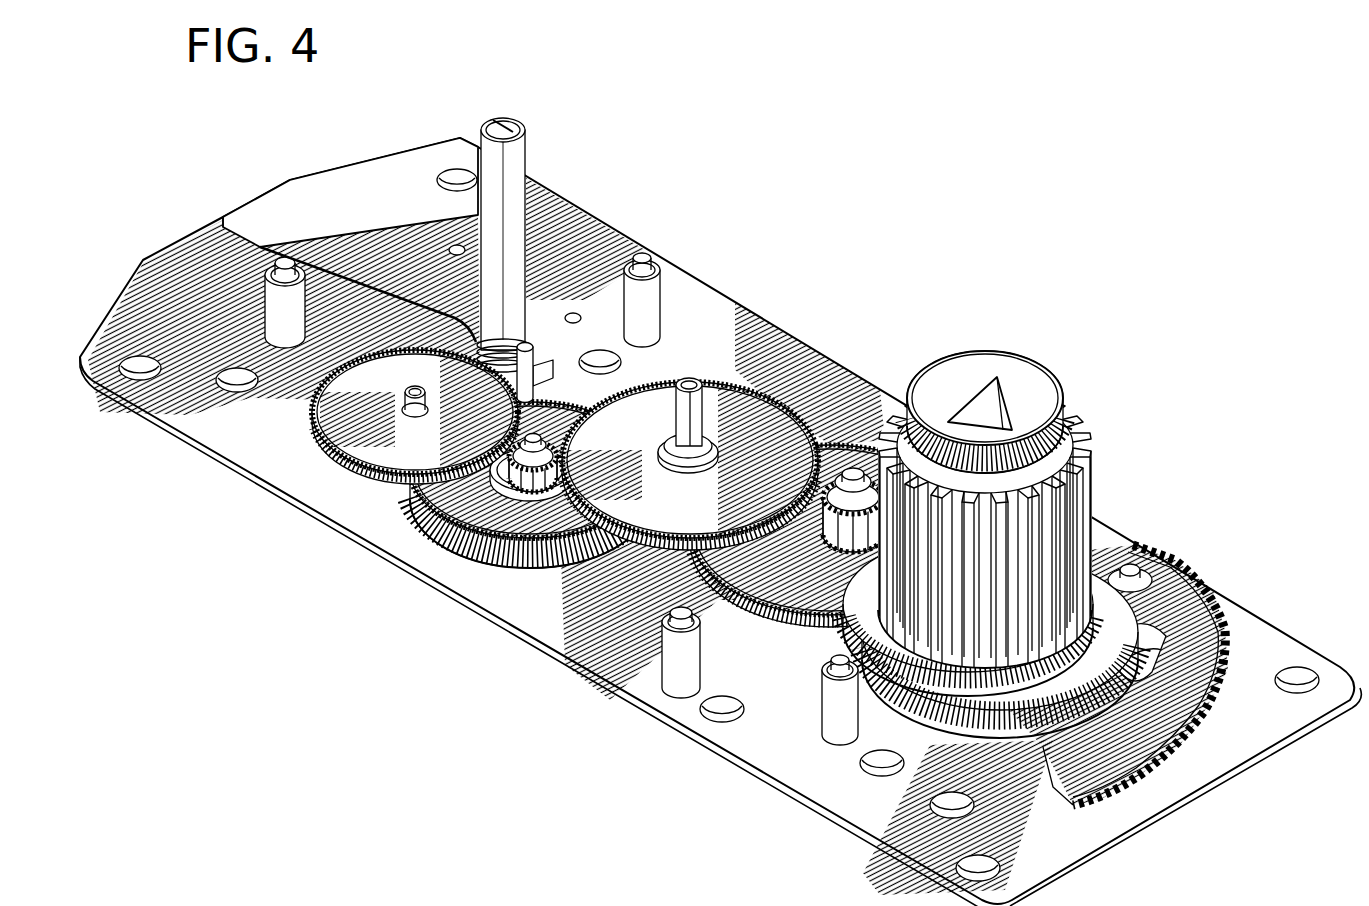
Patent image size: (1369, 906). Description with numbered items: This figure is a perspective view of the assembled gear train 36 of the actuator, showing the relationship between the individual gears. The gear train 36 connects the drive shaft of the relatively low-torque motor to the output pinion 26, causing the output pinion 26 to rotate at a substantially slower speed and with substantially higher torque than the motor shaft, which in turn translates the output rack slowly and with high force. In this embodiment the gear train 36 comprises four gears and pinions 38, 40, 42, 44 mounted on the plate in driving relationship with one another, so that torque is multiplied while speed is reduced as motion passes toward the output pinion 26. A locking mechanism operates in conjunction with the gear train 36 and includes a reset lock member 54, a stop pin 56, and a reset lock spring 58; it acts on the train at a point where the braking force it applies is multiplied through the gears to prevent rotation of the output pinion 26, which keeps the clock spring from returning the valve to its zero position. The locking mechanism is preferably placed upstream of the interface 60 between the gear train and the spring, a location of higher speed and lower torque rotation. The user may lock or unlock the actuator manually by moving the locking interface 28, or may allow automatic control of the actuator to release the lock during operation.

The output pinion 26 is at (1052, 532).
The locking interface 28 is at (460, 227).
The gear train 36 is at (676, 300).
The gear 38 is at (347, 460).
The gear 40 is at (585, 449).
The gear 42 is at (699, 509).
The gear 44 is at (793, 583).
The reset lock member 54 is at (520, 240).
The stop pin 56 is at (545, 378).
The reset lock spring 58 is at (512, 345).
The interface between the gear train and the spring 60 is at (693, 420).